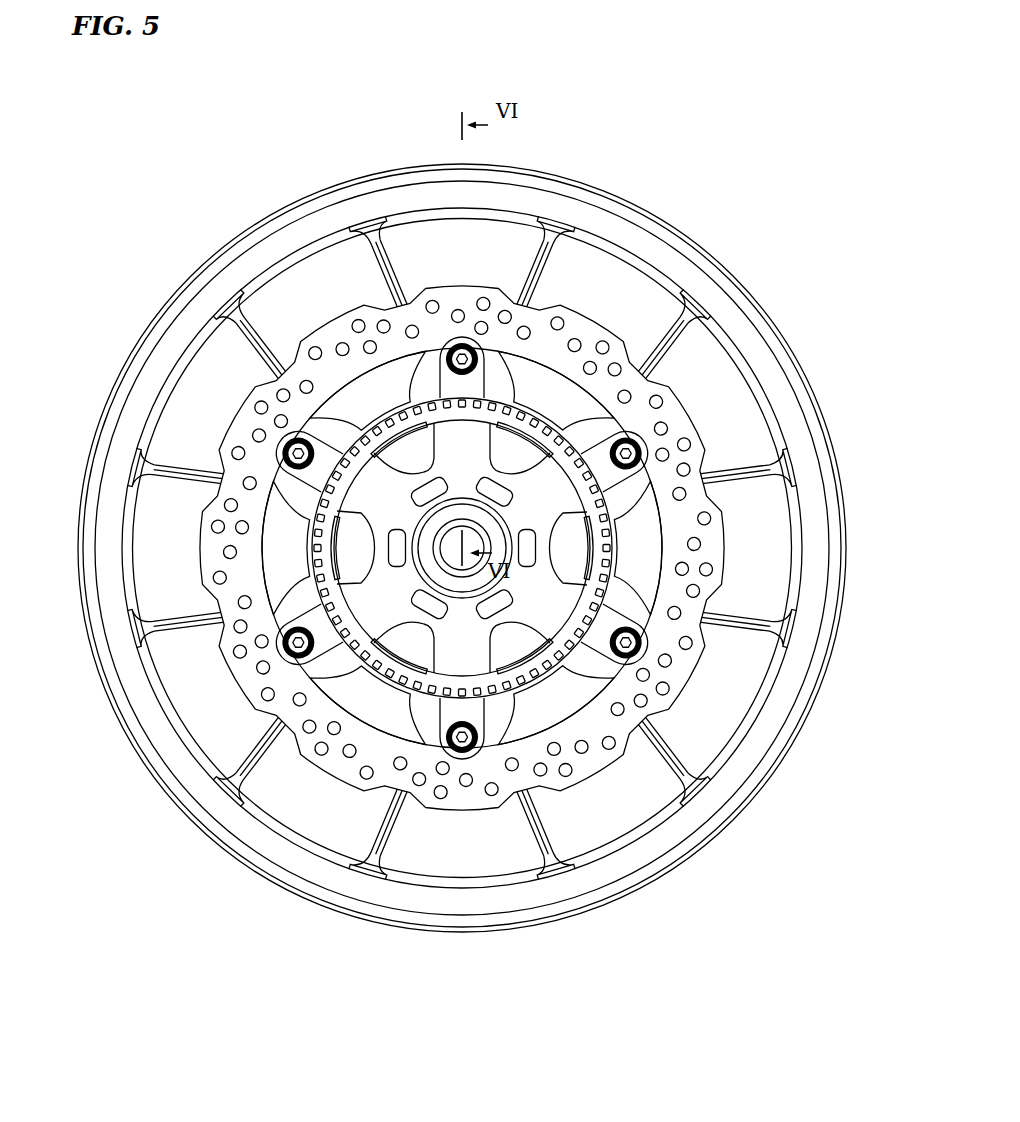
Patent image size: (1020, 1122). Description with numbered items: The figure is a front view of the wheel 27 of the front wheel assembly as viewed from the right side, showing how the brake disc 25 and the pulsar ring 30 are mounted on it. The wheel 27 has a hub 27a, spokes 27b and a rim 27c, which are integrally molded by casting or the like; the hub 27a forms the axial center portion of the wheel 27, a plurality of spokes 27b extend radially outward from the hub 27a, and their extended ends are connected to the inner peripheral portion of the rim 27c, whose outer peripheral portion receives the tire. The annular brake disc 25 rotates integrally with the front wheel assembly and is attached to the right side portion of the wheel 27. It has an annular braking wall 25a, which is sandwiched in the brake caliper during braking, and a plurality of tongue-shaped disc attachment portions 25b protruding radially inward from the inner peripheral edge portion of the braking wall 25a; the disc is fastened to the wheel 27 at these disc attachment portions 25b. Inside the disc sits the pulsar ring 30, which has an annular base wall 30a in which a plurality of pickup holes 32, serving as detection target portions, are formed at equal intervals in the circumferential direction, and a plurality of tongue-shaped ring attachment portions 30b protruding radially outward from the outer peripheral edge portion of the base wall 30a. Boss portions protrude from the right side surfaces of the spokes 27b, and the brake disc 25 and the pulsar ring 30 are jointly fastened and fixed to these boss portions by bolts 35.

The brake disc 25 is at (690, 398).
The braking wall 25a is at (330, 330).
The disc attachment portions 25b is at (293, 404).
The wheel 27 is at (644, 156).
The hub 27a is at (405, 613).
The spokes 27b is at (486, 735).
The rim 27c is at (673, 843).
The pulsar ring 30 is at (556, 411).
The base wall 30a is at (310, 551).
The ring attachment portions 30b is at (320, 475).
The pickup holes 32 is at (432, 690).
The bolts 35 is at (287, 447).